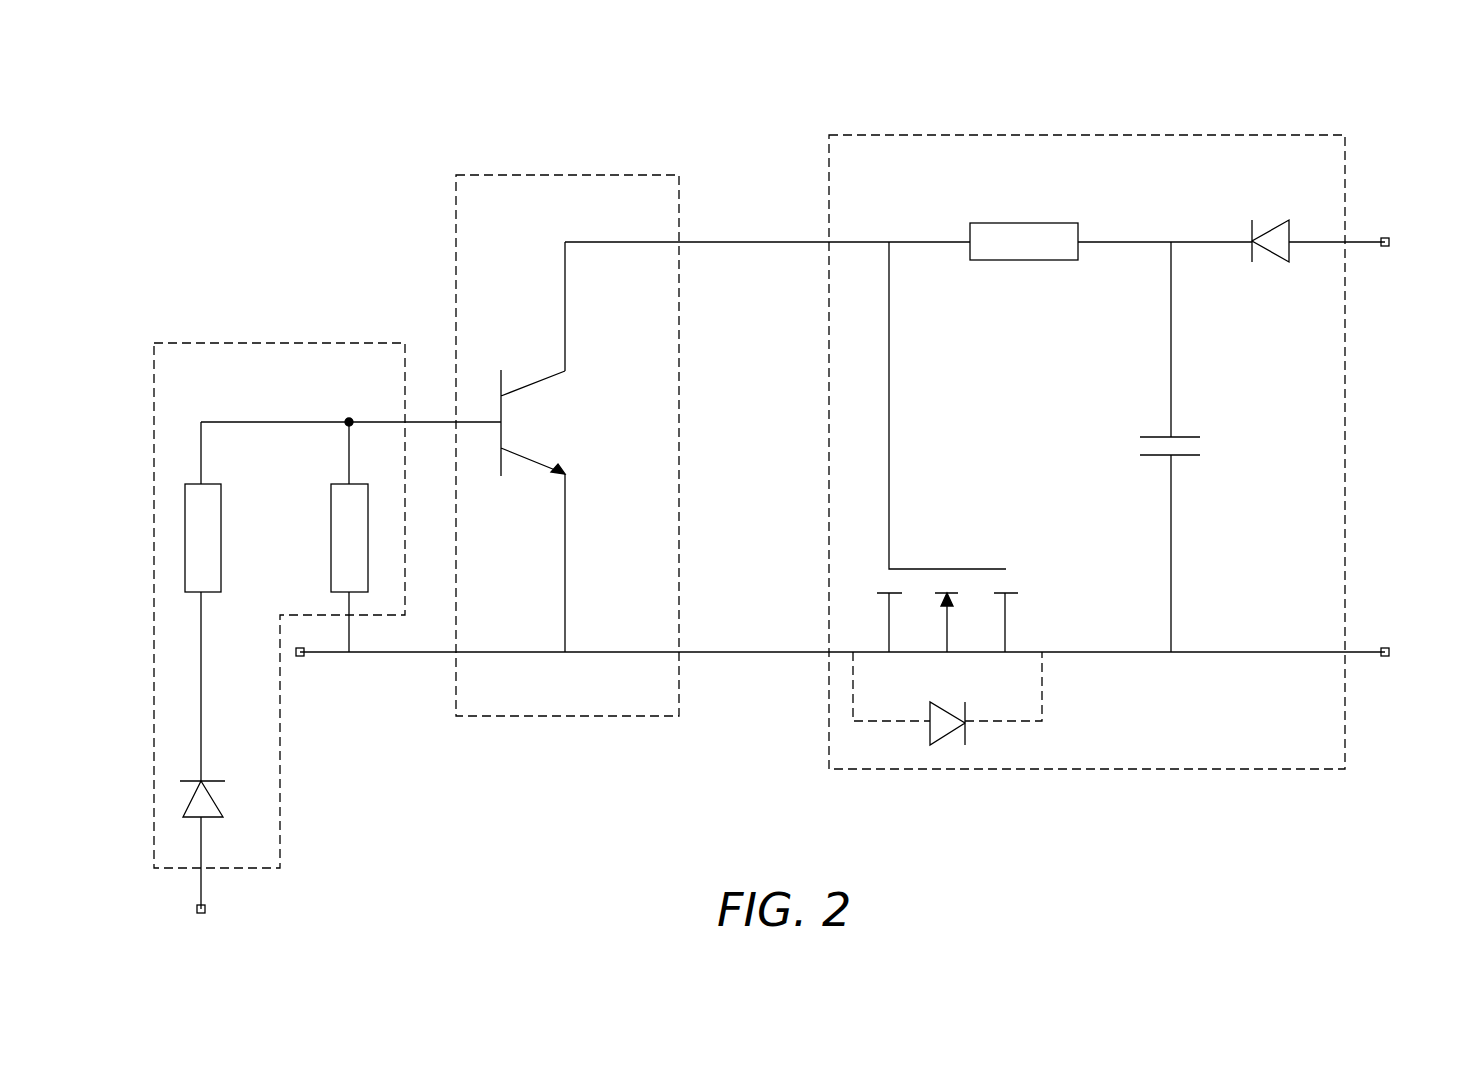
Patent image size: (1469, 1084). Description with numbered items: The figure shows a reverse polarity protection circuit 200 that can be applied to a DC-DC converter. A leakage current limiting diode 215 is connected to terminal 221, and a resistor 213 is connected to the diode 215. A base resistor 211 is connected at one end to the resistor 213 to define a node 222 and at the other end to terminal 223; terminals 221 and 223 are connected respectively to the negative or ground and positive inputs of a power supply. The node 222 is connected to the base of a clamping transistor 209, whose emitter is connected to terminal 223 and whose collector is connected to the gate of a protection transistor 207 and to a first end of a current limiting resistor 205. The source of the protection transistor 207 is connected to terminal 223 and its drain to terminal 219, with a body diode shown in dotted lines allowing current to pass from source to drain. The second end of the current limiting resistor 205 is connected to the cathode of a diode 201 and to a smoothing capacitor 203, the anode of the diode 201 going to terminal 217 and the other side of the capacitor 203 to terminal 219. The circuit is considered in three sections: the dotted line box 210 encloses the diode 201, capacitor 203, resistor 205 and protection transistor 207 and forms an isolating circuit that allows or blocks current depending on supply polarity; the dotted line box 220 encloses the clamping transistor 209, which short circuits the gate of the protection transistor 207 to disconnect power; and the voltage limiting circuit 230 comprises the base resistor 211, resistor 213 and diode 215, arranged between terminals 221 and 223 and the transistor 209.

The reverse polarity protection circuit 200 is at (285, 131).
The diode 201 is at (1272, 222).
The smoothing capacitor 203 is at (1200, 447).
The current limiting resistor 205 is at (1020, 223).
The protection transistor 207 is at (973, 569).
The clamping transistor 209 is at (560, 422).
The dotted line box 210 is at (1318, 770).
The base resistor 211 is at (331, 568).
The resistor 213 is at (221, 500).
The leakage current limiting diode 215 is at (183, 801).
The terminal 217 is at (1392, 242).
The terminal 219 is at (1392, 652).
The dotted line box 220 is at (655, 718).
The terminal 221 is at (197, 909).
The node 222 is at (349, 418).
The terminal 223 is at (296, 652).
The voltage limiting circuit 230 is at (282, 848).